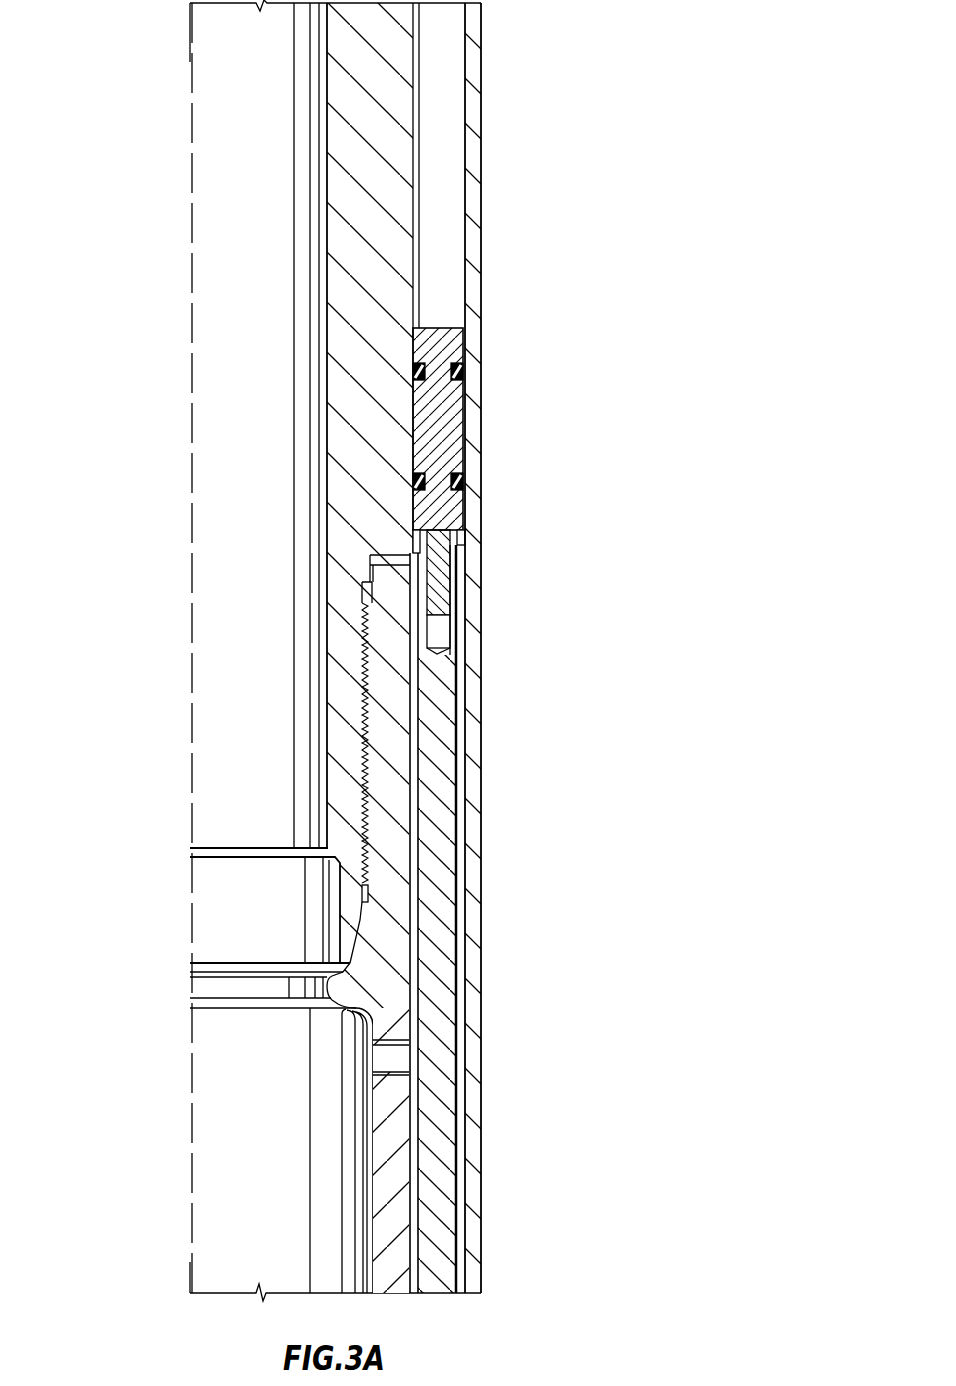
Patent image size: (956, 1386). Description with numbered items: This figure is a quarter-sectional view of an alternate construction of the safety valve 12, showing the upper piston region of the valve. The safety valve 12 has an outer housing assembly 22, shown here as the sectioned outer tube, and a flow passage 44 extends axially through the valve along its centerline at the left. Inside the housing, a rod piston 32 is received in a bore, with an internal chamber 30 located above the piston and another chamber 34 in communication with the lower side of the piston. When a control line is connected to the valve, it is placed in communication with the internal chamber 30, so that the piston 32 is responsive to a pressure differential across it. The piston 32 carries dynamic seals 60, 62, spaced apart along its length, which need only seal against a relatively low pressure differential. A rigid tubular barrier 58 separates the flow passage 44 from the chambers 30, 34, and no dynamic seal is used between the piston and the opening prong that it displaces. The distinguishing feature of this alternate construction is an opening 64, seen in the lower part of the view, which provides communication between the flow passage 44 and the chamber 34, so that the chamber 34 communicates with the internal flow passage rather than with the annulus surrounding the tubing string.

The safety valve 12 is at (370, 650).
The outer housing assembly 22 is at (480, 800).
The internal chamber 30 is at (443, 170).
The rod piston 32 is at (503, 491).
The chamber 34 is at (463, 1192).
The flow passage 44 is at (220, 558).
The rigid tubular barrier 58 is at (407, 1118).
The dynamic seal 60 is at (463, 372).
The dynamic seal 62 is at (463, 484).
The opening 64 is at (388, 1072).